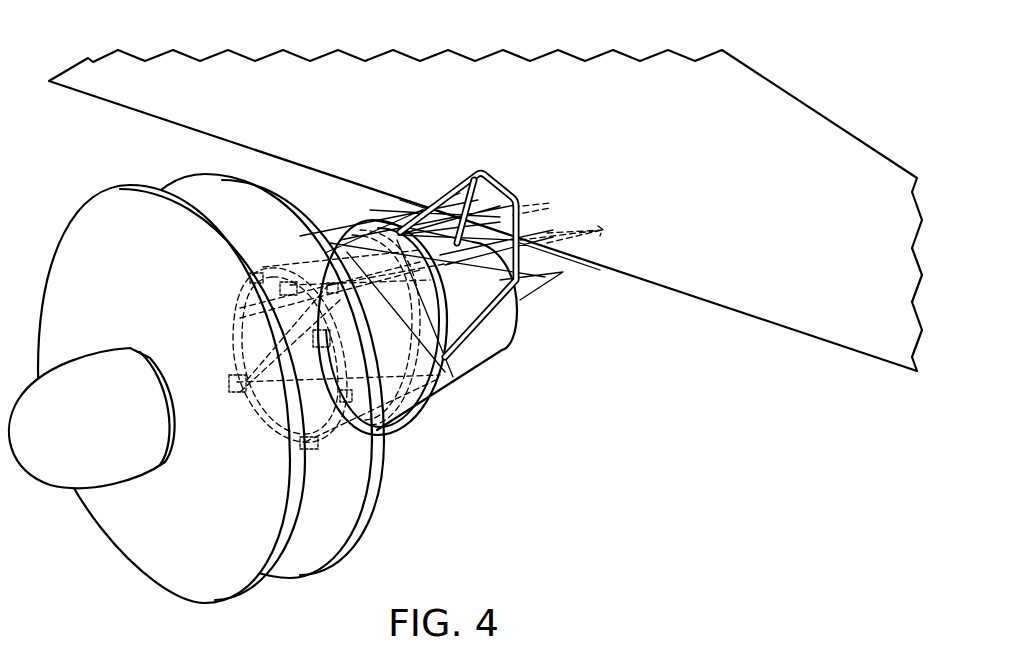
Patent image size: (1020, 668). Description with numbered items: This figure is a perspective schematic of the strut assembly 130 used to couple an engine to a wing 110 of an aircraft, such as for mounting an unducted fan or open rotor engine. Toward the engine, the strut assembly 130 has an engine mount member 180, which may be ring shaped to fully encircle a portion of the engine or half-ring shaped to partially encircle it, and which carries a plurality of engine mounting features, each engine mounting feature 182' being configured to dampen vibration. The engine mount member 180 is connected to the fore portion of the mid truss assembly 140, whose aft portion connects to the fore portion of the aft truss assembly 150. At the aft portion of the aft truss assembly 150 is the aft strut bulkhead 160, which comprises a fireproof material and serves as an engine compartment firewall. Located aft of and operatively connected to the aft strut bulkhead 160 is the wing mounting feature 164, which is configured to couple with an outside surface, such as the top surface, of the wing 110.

The wing 110 is at (812, 108).
The strut assembly 130 is at (328, 230).
The mid truss assembly 140 is at (413, 415).
The aft truss assembly 150 is at (450, 192).
The aft strut bulkhead 160 is at (507, 181).
The wing mounting feature 164 is at (587, 240).
The engine mount member 180 is at (232, 324).
The engine mounting feature 182' is at (314, 382).